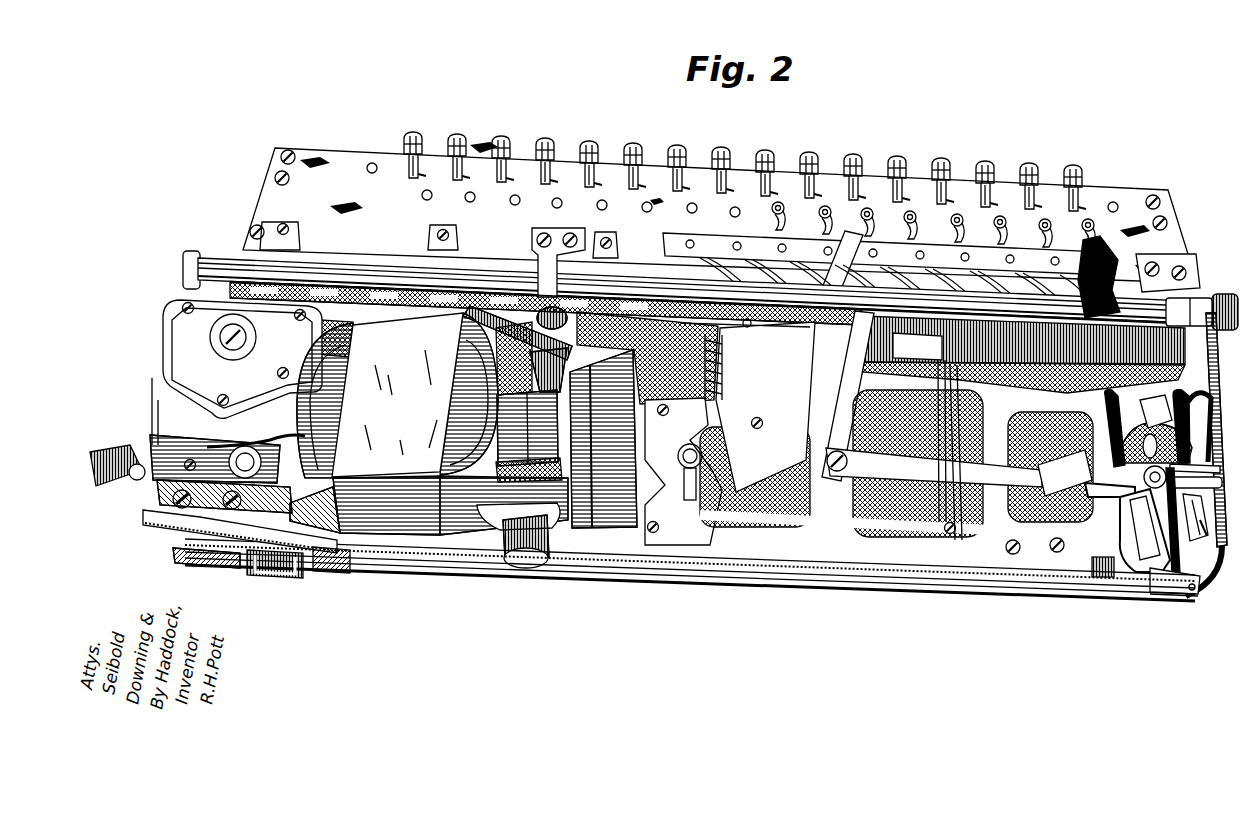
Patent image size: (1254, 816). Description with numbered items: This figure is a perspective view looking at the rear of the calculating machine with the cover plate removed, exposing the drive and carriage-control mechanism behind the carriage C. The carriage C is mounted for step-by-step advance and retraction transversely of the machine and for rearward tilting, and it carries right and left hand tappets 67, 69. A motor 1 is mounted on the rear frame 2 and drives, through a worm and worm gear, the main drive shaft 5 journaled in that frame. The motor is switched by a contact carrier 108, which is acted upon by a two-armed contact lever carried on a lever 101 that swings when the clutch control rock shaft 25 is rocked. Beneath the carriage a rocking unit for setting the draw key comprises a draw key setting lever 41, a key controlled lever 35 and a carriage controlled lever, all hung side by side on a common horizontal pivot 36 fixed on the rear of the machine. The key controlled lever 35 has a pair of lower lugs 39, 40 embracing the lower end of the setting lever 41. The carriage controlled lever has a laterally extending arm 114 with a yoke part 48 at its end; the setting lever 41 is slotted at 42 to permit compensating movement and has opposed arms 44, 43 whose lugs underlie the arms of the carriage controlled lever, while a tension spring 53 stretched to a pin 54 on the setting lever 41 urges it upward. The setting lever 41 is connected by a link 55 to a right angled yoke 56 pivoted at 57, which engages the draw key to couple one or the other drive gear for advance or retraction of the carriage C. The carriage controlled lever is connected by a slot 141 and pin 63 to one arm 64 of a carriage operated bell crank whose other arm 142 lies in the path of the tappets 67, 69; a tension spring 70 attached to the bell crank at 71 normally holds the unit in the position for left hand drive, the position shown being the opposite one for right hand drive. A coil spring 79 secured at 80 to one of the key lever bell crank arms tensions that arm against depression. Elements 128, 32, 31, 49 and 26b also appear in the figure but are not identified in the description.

The top plate 128 is at (352, 255).
The carriage C is at (398, 170).
The right hand tappet 67 is at (833, 263).
The main drive shaft 5 is at (233, 330).
The left hand tappet 69 is at (556, 232).
The arm of carriage operated bell crank 142 is at (862, 320).
The slot 141 is at (1070, 318).
The bracket 32 is at (1148, 320).
The bearing 31 is at (1178, 300).
The contact carrier 108 is at (178, 376).
The motor 1 is at (387, 550).
The rear frame 2 is at (575, 535).
The link 55 is at (607, 553).
The clutch control rock shaft 25 is at (750, 523).
The tension spring 70 is at (893, 535).
The spring connection point 71 is at (935, 540).
The pin 63 is at (985, 527).
The arm of carriage operated bell crank 64 is at (1000, 522).
The knob 49 is at (1040, 490).
The key controlled lever 35 is at (1058, 520).
The yoke part 48 is at (1080, 500).
The coil spring 79 is at (1195, 412).
The spring securing point 80 is at (1160, 455).
The slot 42 is at (1160, 461).
The common horizontal pivot 36 is at (1220, 469).
The laterally extending arm of setting lever 44 is at (1222, 486).
The tension spring 53 is at (1206, 503).
The pin 54 is at (1204, 522).
The laterally extending arm of carriage controlled lever 114 is at (1120, 483).
The laterally extending arm of setting lever 43 is at (1118, 495).
The lower lug 39 is at (1173, 600).
The lower lug 40 is at (1195, 580).
The draw key setting lever 41 is at (1197, 592).
The contact member 26b is at (1148, 432).
The right angled yoke 56 is at (160, 522).
The yoke pivot point 57 is at (175, 548).
The lever 101 is at (290, 580).